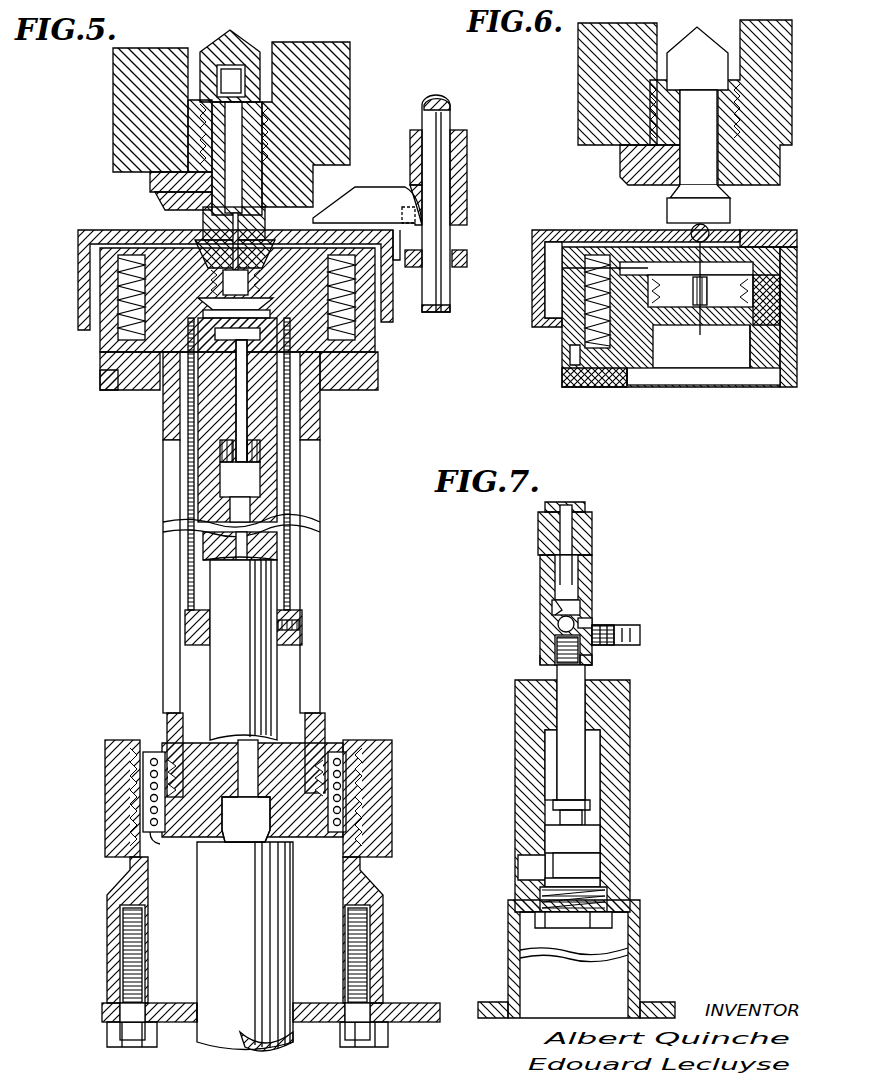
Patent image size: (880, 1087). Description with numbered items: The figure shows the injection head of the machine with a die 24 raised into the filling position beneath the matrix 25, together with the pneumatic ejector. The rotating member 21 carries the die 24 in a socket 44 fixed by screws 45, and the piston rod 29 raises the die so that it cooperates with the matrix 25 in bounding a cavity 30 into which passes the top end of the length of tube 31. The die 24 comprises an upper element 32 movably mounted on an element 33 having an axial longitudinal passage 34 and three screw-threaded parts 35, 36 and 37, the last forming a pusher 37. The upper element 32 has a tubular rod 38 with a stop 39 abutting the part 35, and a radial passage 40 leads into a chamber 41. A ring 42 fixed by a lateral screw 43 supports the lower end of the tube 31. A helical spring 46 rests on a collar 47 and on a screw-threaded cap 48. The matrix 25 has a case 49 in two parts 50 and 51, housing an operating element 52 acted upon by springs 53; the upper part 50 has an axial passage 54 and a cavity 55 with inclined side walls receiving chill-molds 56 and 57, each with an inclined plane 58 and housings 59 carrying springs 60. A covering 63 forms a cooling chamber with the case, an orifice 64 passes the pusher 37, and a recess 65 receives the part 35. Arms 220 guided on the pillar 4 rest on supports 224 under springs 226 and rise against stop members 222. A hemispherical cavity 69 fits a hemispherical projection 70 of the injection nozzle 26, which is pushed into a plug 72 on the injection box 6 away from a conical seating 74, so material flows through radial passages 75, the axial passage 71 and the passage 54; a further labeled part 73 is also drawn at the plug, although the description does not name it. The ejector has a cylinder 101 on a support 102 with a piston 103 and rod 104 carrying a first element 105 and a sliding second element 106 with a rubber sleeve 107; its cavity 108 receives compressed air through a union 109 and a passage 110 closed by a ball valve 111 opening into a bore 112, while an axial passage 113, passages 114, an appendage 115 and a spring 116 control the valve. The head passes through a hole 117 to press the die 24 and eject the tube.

In FIG. 5, the pillar 4 is at (448, 110).
In FIG. 5, the injection box 6 is at (120, 79).
In FIG. 6, the injection box 6 is at (582, 85).
In FIG. 5, the rotating member 21 is at (400, 1005).
In FIG. 5, the die 24 is at (328, 664).
In FIG. 5, the matrix 25 is at (72, 296).
In FIG. 6, the matrix 25 is at (529, 301).
In FIG. 5, the injection nozzle 26 is at (231, 81).
In FIG. 6, the injection nozzle 26 is at (695, 157).
In FIG. 5, the piston rod 29 is at (290, 962).
In FIG. 5, the cavity 30 is at (266, 228).
In FIG. 5, the length of tube 31 is at (188, 450).
In FIG. 5, the upper element 32 is at (352, 340).
In FIG. 5, the element 33 is at (272, 498).
In FIG. 5, the axial longitudinal passage 34 is at (250, 548).
In FIG. 5, the part 35 is at (292, 360).
In FIG. 5, the part 36 is at (300, 722).
In FIG. 5, the pusher 37 is at (326, 728).
In FIG. 5, the tubular rod 38 is at (215, 312).
In FIG. 5, the stop 39 is at (225, 445).
In FIG. 5, the radial passage 40 is at (282, 348).
In FIG. 5, the chamber 41 is at (108, 392).
In FIG. 5, the ring 42 is at (185, 628).
In FIG. 5, the lateral screw 43 is at (302, 628).
In FIG. 5, the socket 44 is at (372, 893).
In FIG. 5, the screw 45 is at (125, 965).
In FIG. 5, the helical spring 46 is at (150, 770).
In FIG. 5, the collar 47 is at (160, 844).
In FIG. 5, the screw-threaded cap 48 is at (125, 738).
In FIG. 6, the case 49 is at (562, 270).
In FIG. 6, the upper part of case 50 is at (590, 255).
In FIG. 6, the lower part of case 51 is at (598, 388).
In FIG. 6, the operating element 52 is at (630, 388).
In FIG. 6, the spring 53 is at (620, 262).
In FIG. 6, the axial passage 54 is at (745, 232).
In FIG. 6, the cavity 55 is at (770, 232).
In FIG. 6, the chill-mold 56 is at (665, 326).
In FIG. 6, the chill-mold 57 is at (760, 372).
In FIG. 6, the inclined plane 58 is at (648, 262).
In FIG. 6, the housing 59 is at (742, 330).
In FIG. 6, the spring 60 is at (706, 322).
In FIG. 6, the covering 63 is at (552, 232).
In FIG. 6, the orifice 64 is at (712, 385).
In FIG. 6, the recess 65 is at (660, 385).
In FIG. 6, the hemispherical cavity 69 is at (712, 218).
In FIG. 6, the hemispherical projection 70 is at (672, 199).
In FIG. 5, the axial passage 71 is at (150, 181).
In FIG. 5, the plug 72 is at (273, 135).
In FIG. 6, the plug 72 is at (722, 85).
In FIG. 5, the lock nut 73 is at (155, 199).
In FIG. 5, the conical seating 74 is at (273, 104).
In FIG. 5, the radial passage 75 is at (185, 104).
In FIG. 7, the cylinder 101 is at (630, 836).
In FIG. 7, the support 102 is at (640, 982).
In FIG. 7, the piston 103 is at (560, 838).
In FIG. 7, the rod 104 is at (577, 742).
In FIG. 7, the first element 105 is at (594, 658).
In FIG. 7, the second element 106 is at (592, 538).
In FIG. 7, the rubber sleeve 107 is at (578, 505).
In FIG. 7, the cavity 108 is at (557, 645).
In FIG. 7, the union 109 is at (640, 640).
In FIG. 7, the passage 110 is at (592, 620).
In FIG. 7, the ball valve 111 is at (558, 630).
In FIG. 7, the bore 112 is at (580, 607).
In FIG. 7, the axial passage 113 is at (573, 560).
In FIG. 7, the passage 114 is at (594, 592).
In FIG. 7, the appendage 115 is at (552, 607).
In FIG. 7, the spring 116 is at (538, 660).
In FIG. 5, the hole 117 is at (197, 1025).
In FIG. 5, the arm 220 is at (330, 210).
In FIG. 5, the stop member 222 is at (410, 133).
In FIG. 5, the support 224 is at (462, 255).
In FIG. 5, the spring 226 is at (450, 170).